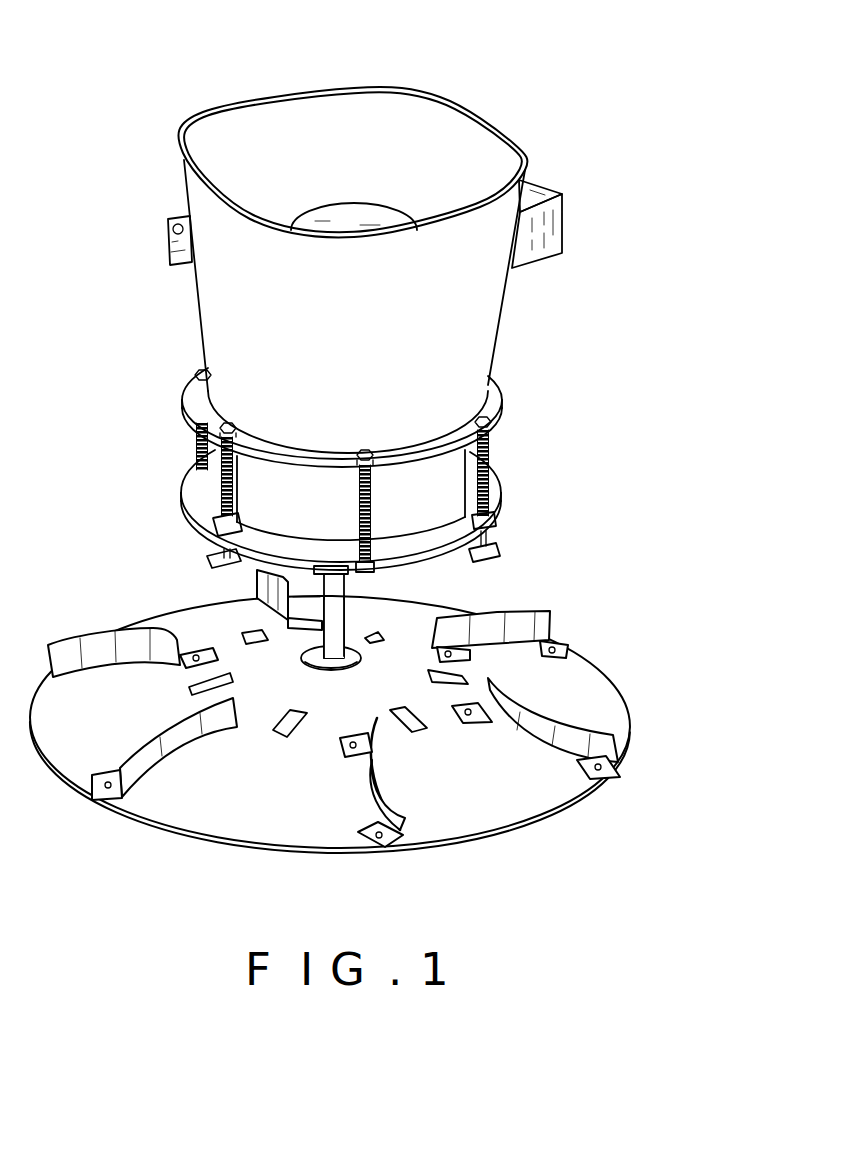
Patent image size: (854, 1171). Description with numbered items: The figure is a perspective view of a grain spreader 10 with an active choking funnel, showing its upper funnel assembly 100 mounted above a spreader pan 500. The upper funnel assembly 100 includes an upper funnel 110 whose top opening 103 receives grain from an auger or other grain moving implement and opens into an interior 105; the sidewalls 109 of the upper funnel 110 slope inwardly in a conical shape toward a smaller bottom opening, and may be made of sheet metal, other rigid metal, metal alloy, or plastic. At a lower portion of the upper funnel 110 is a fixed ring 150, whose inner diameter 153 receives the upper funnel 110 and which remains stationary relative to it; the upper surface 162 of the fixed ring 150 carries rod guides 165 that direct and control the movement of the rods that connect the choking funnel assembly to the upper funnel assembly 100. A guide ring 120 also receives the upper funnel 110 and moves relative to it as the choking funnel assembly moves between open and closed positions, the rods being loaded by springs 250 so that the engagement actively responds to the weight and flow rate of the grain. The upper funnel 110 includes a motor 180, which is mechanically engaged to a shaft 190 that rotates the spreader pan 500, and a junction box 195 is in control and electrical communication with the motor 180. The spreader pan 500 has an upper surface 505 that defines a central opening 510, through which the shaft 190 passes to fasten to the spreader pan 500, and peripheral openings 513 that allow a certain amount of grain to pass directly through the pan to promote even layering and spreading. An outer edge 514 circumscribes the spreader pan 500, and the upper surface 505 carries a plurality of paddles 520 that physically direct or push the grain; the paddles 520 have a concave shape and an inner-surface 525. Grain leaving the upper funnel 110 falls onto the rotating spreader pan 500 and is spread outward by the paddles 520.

The grain spreader 10 is at (118, 339).
The upper funnel assembly 100 is at (517, 343).
The top opening 103 is at (319, 108).
The interior 105 is at (460, 158).
The sidewalls 109 is at (233, 333).
The upper funnel 110 is at (480, 317).
The guide ring 120 is at (500, 406).
The fixed ring 150 is at (498, 496).
The inner diameter 153 is at (273, 532).
The upper surface 162 is at (200, 494).
The rod guides 165 is at (500, 510).
The motor 180 is at (352, 218).
The shaft 190 is at (337, 608).
The junction box 195 is at (550, 226).
The springs 250 is at (487, 465).
The spreader pan 500 is at (632, 670).
The upper surface 505 is at (573, 680).
The central opening 510 is at (312, 664).
The peripheral openings 513 is at (322, 672).
The outer edge 514 is at (552, 810).
The paddles 520 is at (410, 825).
The inner-surface 525 is at (120, 770).